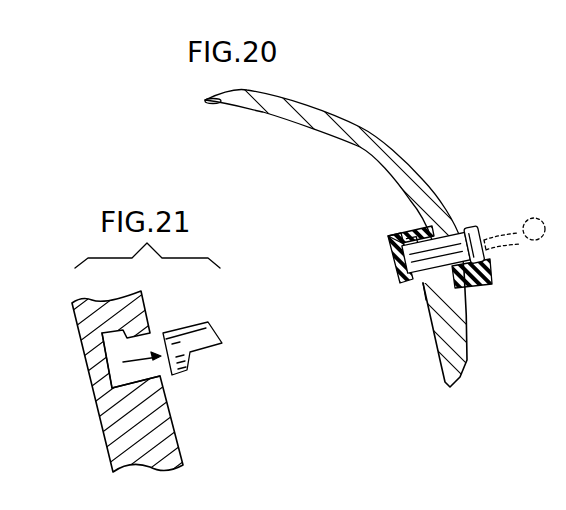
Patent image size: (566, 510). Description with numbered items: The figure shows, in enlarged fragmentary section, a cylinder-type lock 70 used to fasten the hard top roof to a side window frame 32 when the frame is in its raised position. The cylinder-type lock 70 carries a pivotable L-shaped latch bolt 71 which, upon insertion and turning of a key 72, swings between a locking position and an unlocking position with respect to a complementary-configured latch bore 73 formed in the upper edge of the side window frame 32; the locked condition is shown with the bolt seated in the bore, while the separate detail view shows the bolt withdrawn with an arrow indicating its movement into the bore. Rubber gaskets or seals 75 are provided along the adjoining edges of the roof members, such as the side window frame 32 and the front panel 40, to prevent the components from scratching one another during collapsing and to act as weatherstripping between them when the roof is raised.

In FIG. 20, the side window frame 32 is at (450, 314).
In FIG. 21, the side window frame 32 is at (131, 322).
In FIG. 20, the front panel 40 is at (382, 152).
In FIG. 20, the cylinder-type lock 70 is at (448, 231).
In FIG. 20, the L-shaped latch bolt 71 is at (412, 274).
In FIG. 21, the L-shaped latch bolt 71 is at (212, 338).
In FIG. 20, the key 72 is at (517, 217).
In FIG. 20, the latch bore 73 is at (421, 287).
In FIG. 21, the latch bore 73 is at (140, 378).
In FIG. 20, the rubber gaskets or seals 75 is at (403, 233).